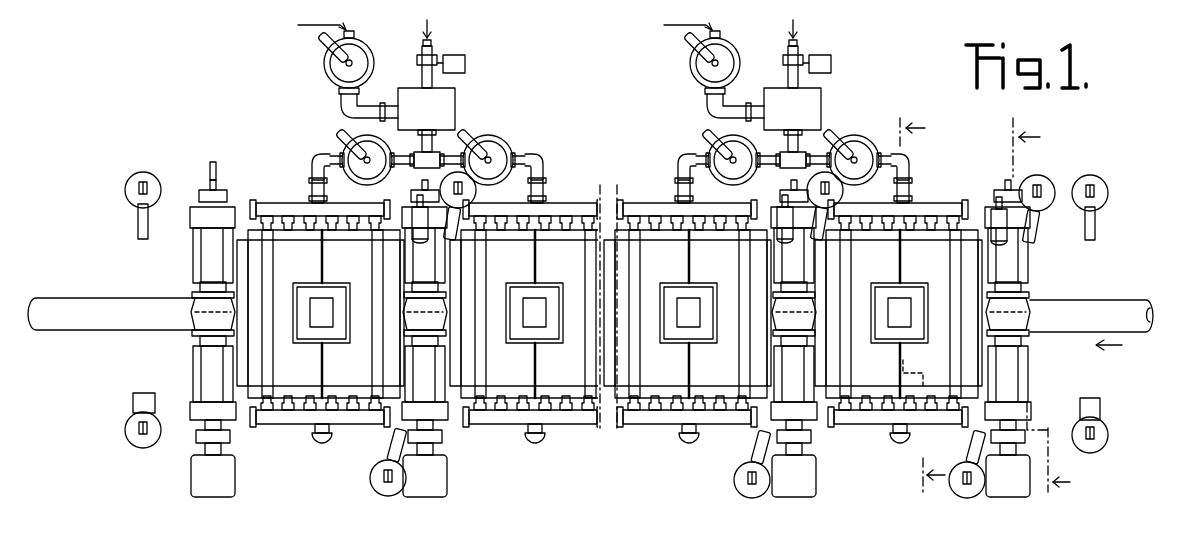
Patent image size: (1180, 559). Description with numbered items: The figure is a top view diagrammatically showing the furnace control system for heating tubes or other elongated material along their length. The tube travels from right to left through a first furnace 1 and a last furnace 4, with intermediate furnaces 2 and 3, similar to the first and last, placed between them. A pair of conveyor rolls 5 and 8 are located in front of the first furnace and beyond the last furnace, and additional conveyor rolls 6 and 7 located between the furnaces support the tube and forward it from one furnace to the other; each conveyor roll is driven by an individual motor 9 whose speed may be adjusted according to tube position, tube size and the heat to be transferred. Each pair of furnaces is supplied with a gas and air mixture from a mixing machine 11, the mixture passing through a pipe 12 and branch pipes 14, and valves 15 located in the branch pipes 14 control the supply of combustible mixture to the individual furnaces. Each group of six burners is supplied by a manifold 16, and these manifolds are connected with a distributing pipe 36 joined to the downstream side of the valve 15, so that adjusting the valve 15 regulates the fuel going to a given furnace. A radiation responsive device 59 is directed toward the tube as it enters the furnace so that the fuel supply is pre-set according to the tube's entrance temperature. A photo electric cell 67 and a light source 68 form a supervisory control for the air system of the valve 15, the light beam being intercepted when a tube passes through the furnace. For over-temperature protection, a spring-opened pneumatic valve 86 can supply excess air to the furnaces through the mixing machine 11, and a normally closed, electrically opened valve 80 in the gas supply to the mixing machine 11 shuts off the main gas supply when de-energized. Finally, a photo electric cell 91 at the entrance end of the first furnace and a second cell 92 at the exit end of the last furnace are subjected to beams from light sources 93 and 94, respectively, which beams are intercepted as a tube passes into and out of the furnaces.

The first furnace 1 is at (898, 394).
The intermediate furnace 2 is at (687, 394).
The intermediate furnace 3 is at (697, 338).
The last furnace 4 is at (320, 394).
The conveyor roll 5 is at (1027, 297).
The conveyor roll 6 is at (776, 337).
The conveyor roll 7 is at (410, 337).
The conveyor roll 8 is at (197, 292).
The motor 9 is at (228, 497).
The mixing machine 11 is at (455, 118).
The pipe 12 is at (420, 138).
The branch pipes 14 is at (398, 165).
The valves 15 is at (345, 150).
The manifold 16 is at (300, 208).
The distributing pipe 36 is at (314, 180).
The radiation responsive device 59 is at (413, 225).
The photo electric cell 67 is at (386, 452).
The light source 68 is at (470, 214).
The valve 80 is at (465, 66).
The pneumatic valve 86 is at (324, 67).
The photo electric cell 91 is at (1095, 400).
The photo electric cell 92 is at (145, 445).
The light source 93 is at (1090, 241).
The light source 94 is at (141, 176).